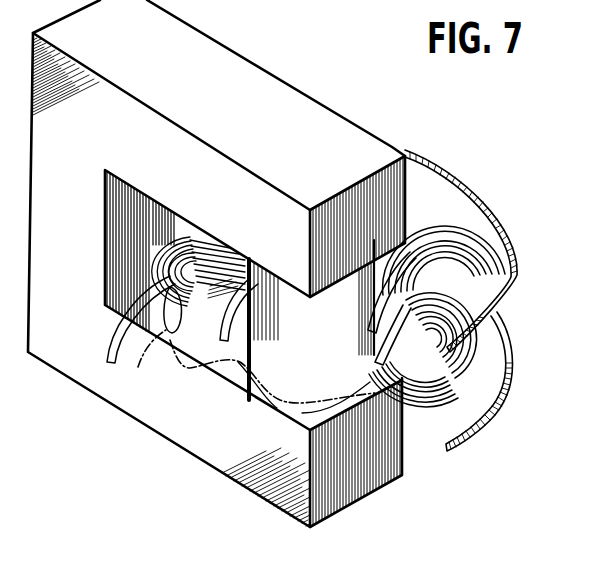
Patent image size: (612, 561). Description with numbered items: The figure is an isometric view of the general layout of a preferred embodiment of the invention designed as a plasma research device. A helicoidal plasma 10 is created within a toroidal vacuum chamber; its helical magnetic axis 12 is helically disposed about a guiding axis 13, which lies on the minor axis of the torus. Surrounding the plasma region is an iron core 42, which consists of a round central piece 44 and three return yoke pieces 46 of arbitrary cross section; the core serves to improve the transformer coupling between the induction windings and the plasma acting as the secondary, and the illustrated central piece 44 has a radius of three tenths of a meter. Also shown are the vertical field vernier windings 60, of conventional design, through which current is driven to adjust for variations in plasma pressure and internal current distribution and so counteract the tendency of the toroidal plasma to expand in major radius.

The helicoidal plasma 10 is at (162, 334).
The helical magnetic axis 12 is at (188, 364).
The guiding axis 13 is at (233, 396).
The iron core 42 is at (317, 95).
The round central piece 44 is at (340, 336).
The return yoke pieces 46 is at (79, 241).
The vertical field vernier windings 60 is at (487, 425).